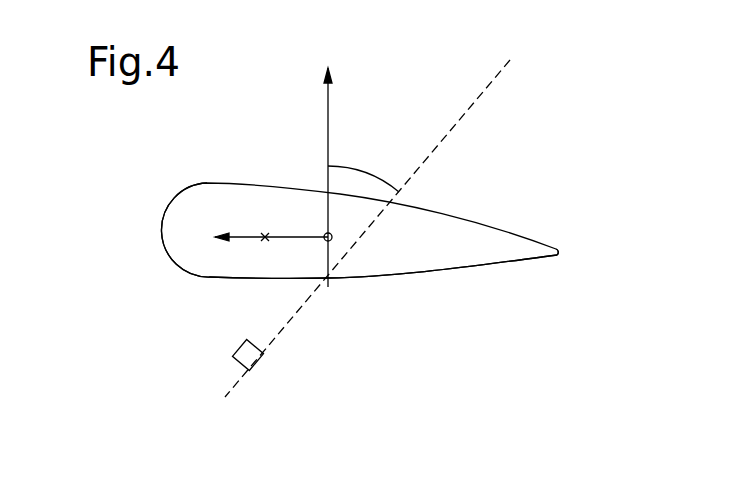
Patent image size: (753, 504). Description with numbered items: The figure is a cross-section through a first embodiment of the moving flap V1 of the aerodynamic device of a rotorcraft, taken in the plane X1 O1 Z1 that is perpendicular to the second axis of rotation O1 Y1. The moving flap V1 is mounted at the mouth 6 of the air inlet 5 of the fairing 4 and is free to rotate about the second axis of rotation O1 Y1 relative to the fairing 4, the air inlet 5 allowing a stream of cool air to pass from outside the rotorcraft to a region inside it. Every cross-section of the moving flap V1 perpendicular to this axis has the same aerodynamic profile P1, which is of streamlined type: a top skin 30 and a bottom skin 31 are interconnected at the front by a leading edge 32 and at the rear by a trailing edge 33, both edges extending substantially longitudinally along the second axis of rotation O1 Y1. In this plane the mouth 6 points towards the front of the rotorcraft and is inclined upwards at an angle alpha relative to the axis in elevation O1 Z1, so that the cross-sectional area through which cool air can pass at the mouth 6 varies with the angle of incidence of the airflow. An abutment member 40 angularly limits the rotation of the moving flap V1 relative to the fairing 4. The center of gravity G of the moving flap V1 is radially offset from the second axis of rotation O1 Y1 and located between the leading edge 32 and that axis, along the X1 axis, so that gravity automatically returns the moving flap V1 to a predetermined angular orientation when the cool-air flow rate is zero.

The fairing 4 is at (270, 372).
The air inlet 5 is at (348, 347).
The mouth 6 is at (390, 127).
The top skin 30 is at (490, 222).
The bottom skin 31 is at (355, 275).
The leading edge 32 is at (157, 232).
The trailing edge 33 is at (558, 252).
The abutment member 40 is at (232, 350).
The center of gravity G is at (265, 232).
The moving flap V1 is at (442, 210).
The aerodynamic profile P1 is at (442, 268).
The origin of the flap reference frame O1 is at (346, 227).
The X axis of the flap reference frame X1 is at (253, 242).
The second axis of rotation Y1 is at (306, 217).
The axis in elevation Z1 is at (326, 160).
The inclination angle alpha is at (363, 166).